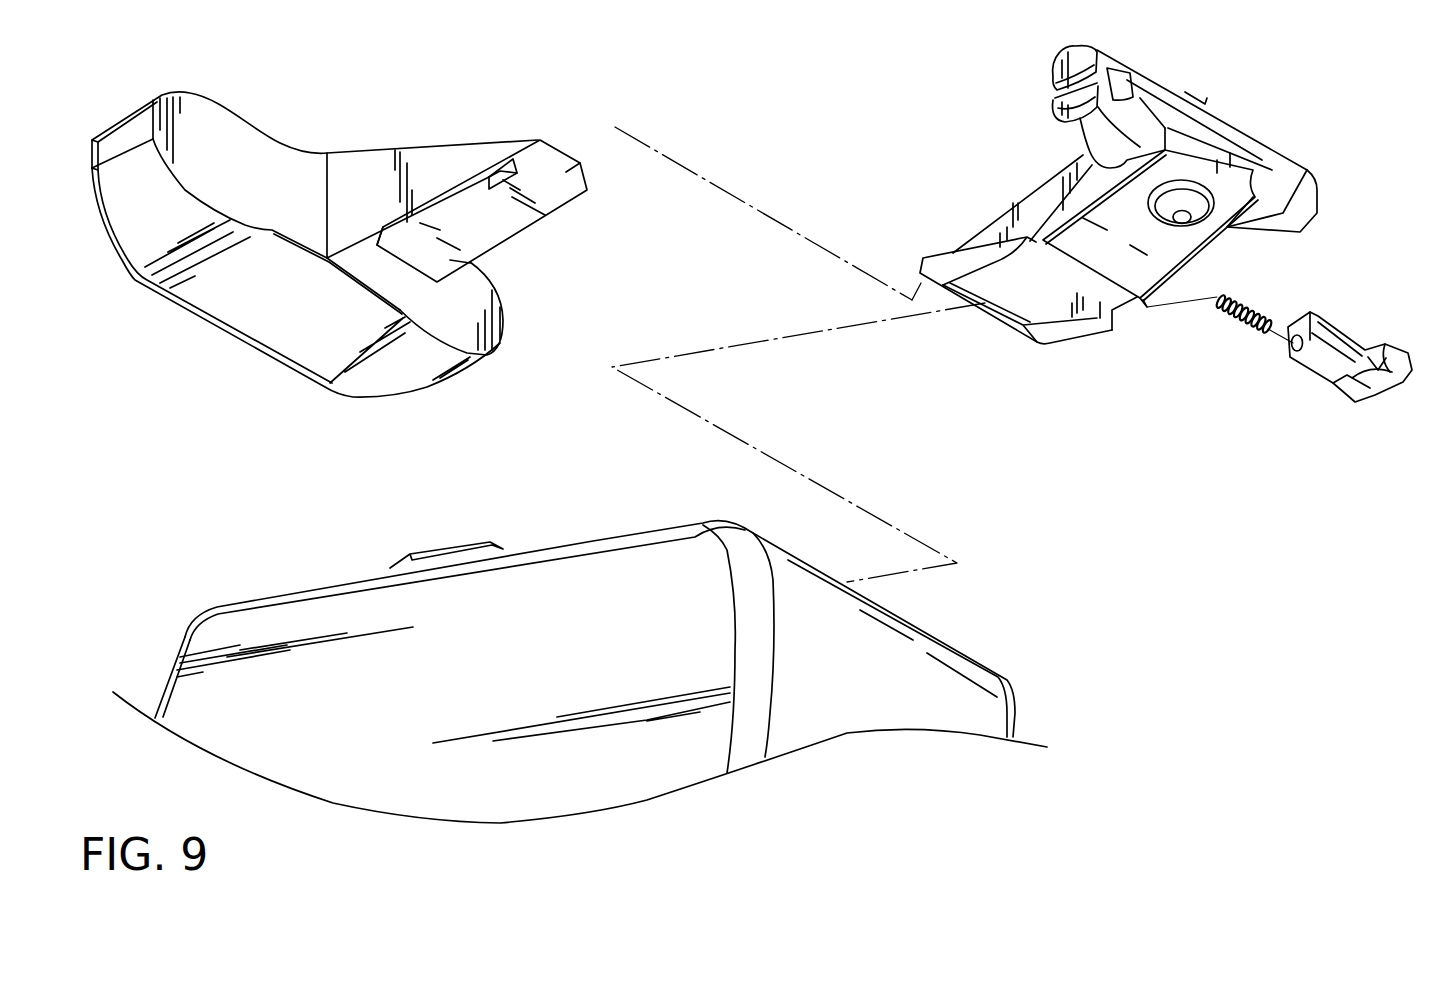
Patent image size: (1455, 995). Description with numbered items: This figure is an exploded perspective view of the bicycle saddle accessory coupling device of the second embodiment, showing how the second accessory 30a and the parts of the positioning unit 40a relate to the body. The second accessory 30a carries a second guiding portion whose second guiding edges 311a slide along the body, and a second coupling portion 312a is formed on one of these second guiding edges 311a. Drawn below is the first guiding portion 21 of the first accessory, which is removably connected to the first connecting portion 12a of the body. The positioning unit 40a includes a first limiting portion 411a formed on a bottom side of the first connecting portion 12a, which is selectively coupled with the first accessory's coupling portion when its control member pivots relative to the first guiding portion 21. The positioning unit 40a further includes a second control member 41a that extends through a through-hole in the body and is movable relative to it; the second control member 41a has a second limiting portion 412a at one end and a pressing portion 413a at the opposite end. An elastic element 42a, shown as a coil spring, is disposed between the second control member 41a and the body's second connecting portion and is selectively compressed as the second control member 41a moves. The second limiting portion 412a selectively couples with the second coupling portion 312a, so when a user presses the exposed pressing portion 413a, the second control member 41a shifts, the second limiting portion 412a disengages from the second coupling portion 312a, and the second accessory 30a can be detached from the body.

The first connecting portion 12a is at (1106, 228).
The first guiding portion 21 is at (490, 543).
The second accessory 30a is at (339, 217).
The second guiding edge 311a is at (455, 197).
The second coupling portion 312a is at (499, 171).
The positioning unit 40a is at (1299, 369).
The second control member 41a is at (1369, 354).
The first limiting portion 411a is at (1000, 308).
The second limiting portion 412a is at (1325, 313).
The pressing portion 413a is at (1412, 350).
The elastic element 42a is at (1218, 308).